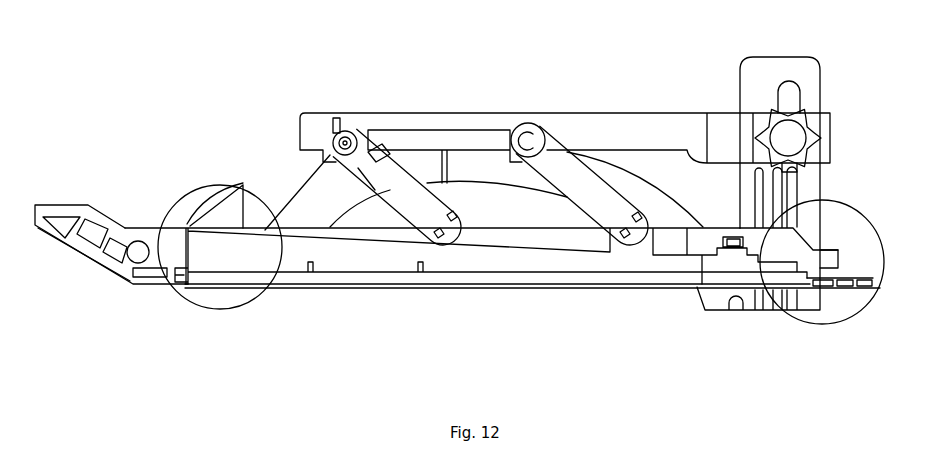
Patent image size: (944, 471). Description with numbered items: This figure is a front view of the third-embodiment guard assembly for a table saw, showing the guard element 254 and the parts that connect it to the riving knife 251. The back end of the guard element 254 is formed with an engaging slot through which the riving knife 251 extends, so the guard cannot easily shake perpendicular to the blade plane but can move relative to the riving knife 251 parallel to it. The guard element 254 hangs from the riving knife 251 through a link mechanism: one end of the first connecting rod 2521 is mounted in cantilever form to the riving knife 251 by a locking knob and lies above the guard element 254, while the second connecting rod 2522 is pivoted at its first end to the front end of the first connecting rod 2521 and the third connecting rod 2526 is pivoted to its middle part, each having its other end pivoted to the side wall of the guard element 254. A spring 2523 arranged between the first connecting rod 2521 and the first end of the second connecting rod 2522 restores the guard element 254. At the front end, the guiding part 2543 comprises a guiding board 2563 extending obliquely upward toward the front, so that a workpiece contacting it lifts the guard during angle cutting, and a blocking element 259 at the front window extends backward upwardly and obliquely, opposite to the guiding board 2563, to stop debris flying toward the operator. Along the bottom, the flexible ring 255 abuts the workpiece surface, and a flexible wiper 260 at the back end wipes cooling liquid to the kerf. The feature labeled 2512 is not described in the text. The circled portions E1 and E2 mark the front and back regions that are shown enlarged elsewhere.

The portion E1 is at (177, 203).
The portion E2 is at (818, 327).
The guiding part 2543 is at (66, 195).
The guiding board 2563 is at (90, 255).
The blocking element 259 is at (233, 212).
The guard element 254 is at (300, 185).
The first connecting rod 2521 is at (492, 122).
The spring 2523 is at (337, 125).
The second connecting rod 2522 is at (410, 203).
The third connecting rod 2526 is at (593, 188).
The riving knife 251 is at (757, 87).
The slotted seat 2512 is at (775, 227).
The flexible wiper 260 is at (850, 258).
The flexible ring 255 is at (498, 278).